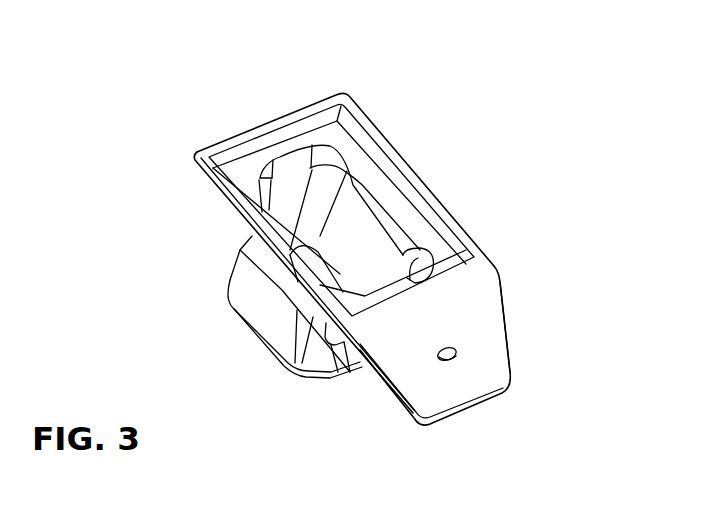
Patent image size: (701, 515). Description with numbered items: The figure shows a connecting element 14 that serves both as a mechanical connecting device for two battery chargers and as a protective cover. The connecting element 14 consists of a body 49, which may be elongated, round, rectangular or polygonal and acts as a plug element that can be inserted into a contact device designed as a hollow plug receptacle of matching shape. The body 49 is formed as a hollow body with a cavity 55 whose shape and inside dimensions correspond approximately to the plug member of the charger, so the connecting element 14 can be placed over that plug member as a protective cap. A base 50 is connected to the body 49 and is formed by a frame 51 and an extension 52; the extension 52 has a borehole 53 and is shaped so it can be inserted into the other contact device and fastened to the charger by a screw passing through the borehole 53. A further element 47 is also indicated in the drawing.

The connecting element 14 is at (230, 100).
The mounting element 47 is at (406, 6).
The body 49 is at (277, 315).
The base 50 is at (460, 216).
The frame 51 is at (393, 152).
The extension 52 is at (488, 332).
The borehole 53 is at (452, 360).
The cavity 55 is at (276, 205).